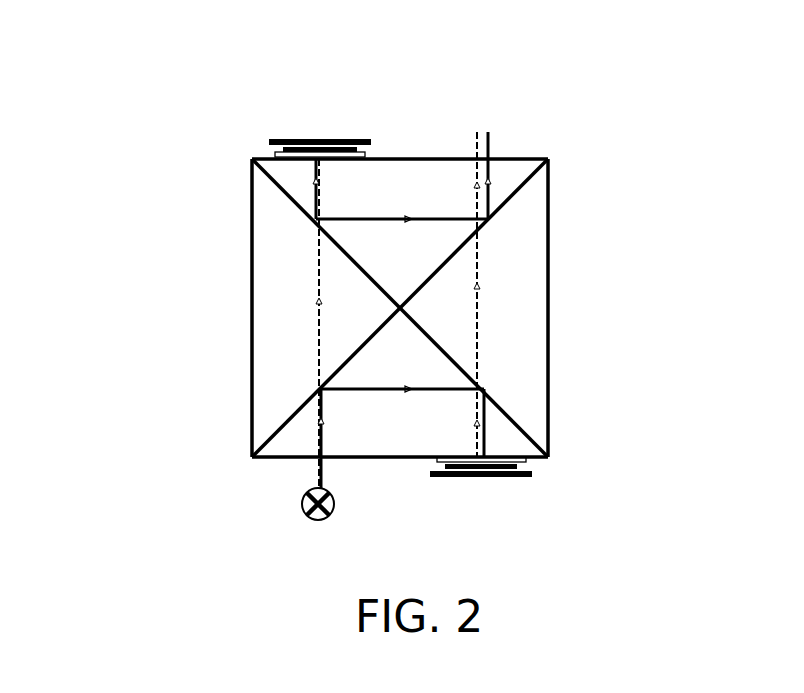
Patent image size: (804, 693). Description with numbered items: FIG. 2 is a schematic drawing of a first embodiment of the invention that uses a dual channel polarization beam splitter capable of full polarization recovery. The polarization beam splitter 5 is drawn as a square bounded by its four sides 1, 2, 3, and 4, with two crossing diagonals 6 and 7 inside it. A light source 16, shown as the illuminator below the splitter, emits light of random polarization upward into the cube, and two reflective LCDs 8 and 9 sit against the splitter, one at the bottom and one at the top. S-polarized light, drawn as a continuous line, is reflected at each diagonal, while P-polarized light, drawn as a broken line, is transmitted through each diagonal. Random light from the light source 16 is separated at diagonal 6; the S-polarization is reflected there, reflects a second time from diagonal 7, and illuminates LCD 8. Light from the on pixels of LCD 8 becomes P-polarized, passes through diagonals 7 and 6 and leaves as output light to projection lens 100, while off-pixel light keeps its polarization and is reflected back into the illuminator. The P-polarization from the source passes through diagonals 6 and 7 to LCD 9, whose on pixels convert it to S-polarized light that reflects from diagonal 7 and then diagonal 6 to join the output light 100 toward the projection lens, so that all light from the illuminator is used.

The side 1 is at (273, 458).
The side 2 is at (520, 157).
The side 3 is at (252, 323).
The side 4 is at (548, 315).
The polarization beam splitter 5 is at (172, 219).
The diagonal 6 is at (530, 198).
The diagonal 7 is at (283, 191).
The reflective LCD 8 is at (482, 477).
The reflective LCD 9 is at (317, 138).
The light source 16 is at (320, 521).
The output light to projection lens 100 is at (498, 125).